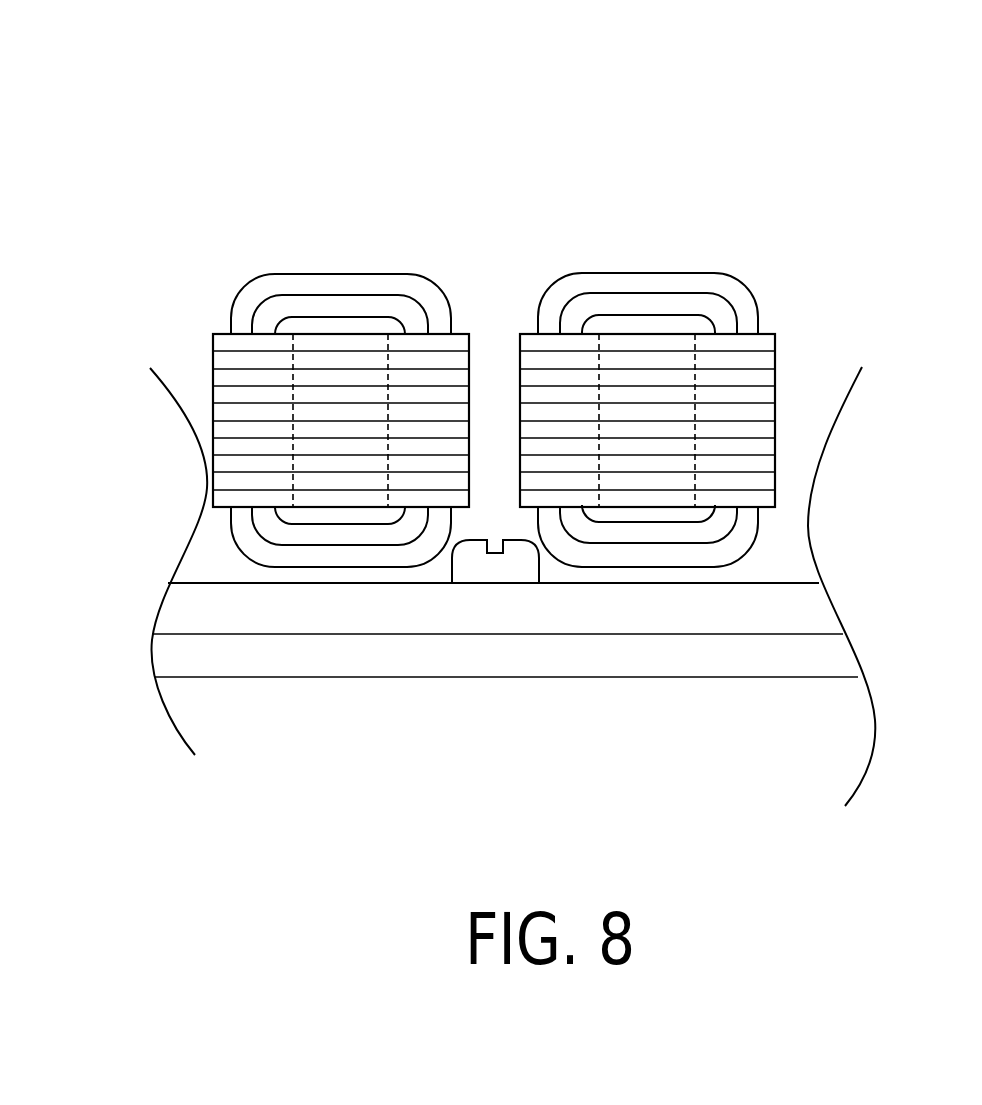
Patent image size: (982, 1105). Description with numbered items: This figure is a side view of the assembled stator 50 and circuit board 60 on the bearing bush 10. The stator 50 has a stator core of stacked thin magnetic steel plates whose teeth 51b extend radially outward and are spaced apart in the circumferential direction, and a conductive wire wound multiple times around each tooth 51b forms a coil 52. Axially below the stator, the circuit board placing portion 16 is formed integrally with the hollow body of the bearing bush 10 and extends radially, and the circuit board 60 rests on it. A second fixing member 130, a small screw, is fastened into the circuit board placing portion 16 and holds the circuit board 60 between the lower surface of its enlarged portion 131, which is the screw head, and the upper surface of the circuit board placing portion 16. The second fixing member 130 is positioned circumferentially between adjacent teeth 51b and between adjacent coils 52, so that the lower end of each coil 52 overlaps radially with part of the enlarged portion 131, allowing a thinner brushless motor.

The bearing bush 10 is at (512, 477).
The circuit board placing portion 16 is at (302, 657).
The stator 50 is at (252, 328).
The teeth 51b is at (327, 412).
The coil 52 is at (250, 308).
The circuit board 60 is at (699, 613).
The second fixing member 130 is at (557, 426).
The enlarged portion 131 is at (493, 565).